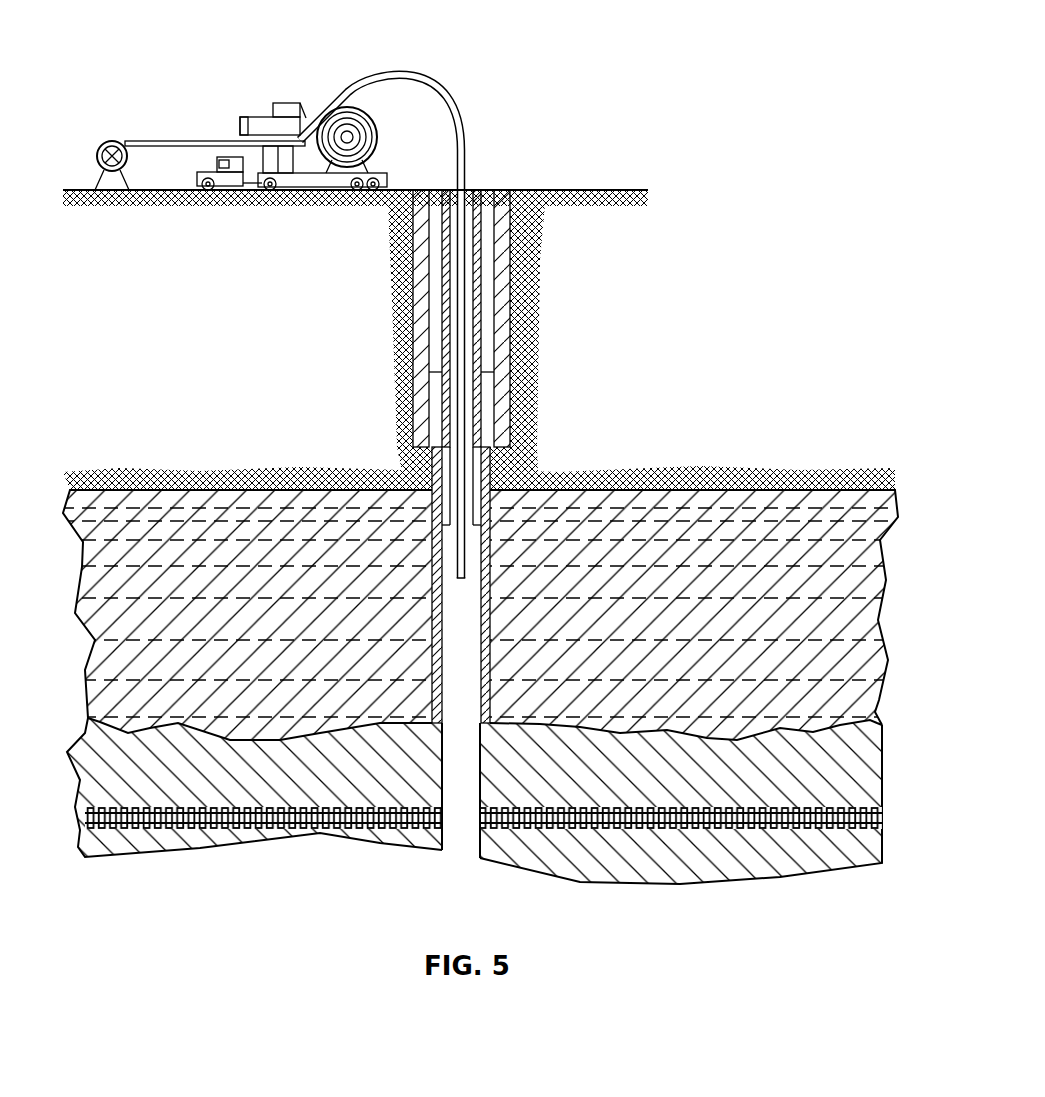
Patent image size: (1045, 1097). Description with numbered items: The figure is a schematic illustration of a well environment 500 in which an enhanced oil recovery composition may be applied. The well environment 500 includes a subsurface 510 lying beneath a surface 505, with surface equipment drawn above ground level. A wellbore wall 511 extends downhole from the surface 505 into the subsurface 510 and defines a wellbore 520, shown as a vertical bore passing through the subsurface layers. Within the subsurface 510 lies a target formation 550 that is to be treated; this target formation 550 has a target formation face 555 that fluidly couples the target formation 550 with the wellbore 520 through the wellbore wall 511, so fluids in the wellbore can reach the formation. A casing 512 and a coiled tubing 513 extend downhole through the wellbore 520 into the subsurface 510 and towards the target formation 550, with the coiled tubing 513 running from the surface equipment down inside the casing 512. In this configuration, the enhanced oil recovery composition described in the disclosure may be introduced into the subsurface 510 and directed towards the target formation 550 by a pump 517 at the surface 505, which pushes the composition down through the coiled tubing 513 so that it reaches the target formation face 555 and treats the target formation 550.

The well environment 500 is at (716, 47).
The surface 505 is at (626, 157).
The subsurface 510 is at (700, 510).
The wellbore wall 511 is at (521, 431).
The casing 512 is at (486, 285).
The coiled tubing 513 is at (377, 86).
The pump 517 is at (106, 147).
The wellbore 520 is at (482, 782).
The target formation 550 is at (893, 820).
The target formation face 555 is at (463, 818).